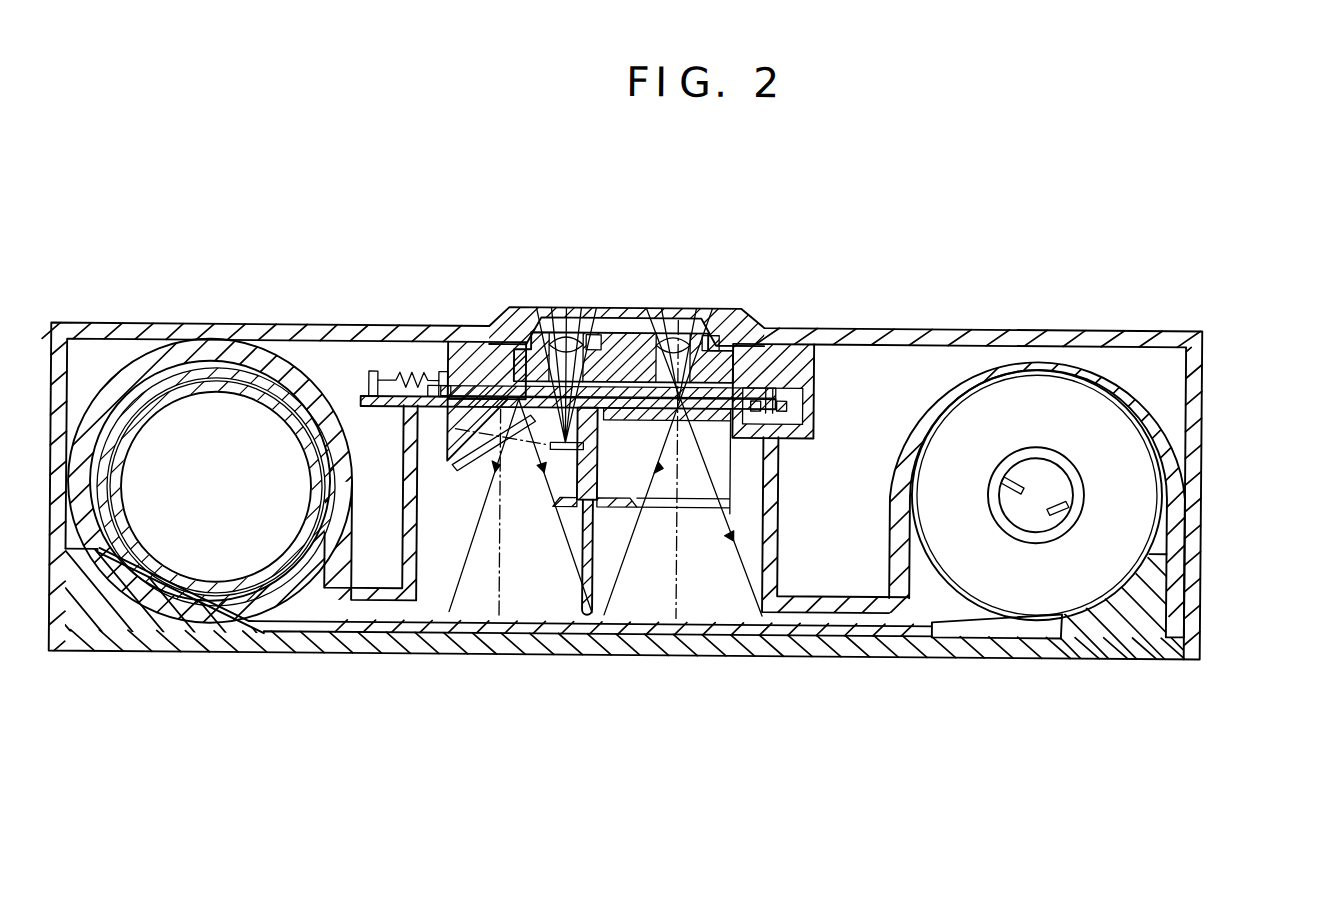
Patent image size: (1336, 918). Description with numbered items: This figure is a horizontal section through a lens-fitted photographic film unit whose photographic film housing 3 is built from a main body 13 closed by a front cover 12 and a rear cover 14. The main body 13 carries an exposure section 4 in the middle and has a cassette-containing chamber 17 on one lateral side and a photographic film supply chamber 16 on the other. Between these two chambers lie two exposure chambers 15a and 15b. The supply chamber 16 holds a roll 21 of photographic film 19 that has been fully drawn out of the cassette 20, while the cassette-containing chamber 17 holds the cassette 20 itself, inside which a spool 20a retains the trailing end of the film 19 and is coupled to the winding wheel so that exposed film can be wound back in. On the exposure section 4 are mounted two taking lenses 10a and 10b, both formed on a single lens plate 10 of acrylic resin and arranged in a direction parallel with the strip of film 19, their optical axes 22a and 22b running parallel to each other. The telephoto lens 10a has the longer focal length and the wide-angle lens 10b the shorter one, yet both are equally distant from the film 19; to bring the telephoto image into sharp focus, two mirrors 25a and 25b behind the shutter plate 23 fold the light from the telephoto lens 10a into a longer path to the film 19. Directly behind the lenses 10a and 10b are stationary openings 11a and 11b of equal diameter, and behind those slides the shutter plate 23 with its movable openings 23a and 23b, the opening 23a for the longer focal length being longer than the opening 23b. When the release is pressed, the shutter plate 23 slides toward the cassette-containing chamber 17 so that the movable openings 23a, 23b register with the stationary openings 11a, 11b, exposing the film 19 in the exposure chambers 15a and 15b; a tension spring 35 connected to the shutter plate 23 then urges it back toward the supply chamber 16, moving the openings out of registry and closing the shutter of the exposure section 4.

The photographic film housing 3 is at (1205, 549).
The exposure section 4 is at (761, 329).
The lens plate 10 is at (609, 333).
The telephoto taking lens 10a is at (546, 340).
The wide-angle taking lens 10b is at (675, 343).
The stationary opening 11a is at (590, 334).
The stationary opening 11b is at (712, 336).
The front cover 12 is at (1010, 328).
The main body 13 is at (780, 476).
The rear cover 14 is at (1143, 648).
The exposure chamber 15a is at (473, 553).
The exposure chamber 15b is at (615, 550).
The photographic film supply chamber 16 is at (312, 604).
The cassette-containing chamber 17 is at (922, 612).
The photographic film 19 is at (832, 637).
The cassette 20 is at (1060, 600).
The spool 20a is at (1068, 488).
The roll 21 is at (143, 533).
The optical axis 22a is at (505, 624).
The optical axis 22b is at (682, 622).
The shutter plate 23 is at (463, 396).
The movable opening 23a is at (506, 343).
The movable opening 23b is at (613, 412).
The mirror 25a is at (545, 438).
The mirror 25b is at (488, 436).
The tension spring 35 is at (398, 372).